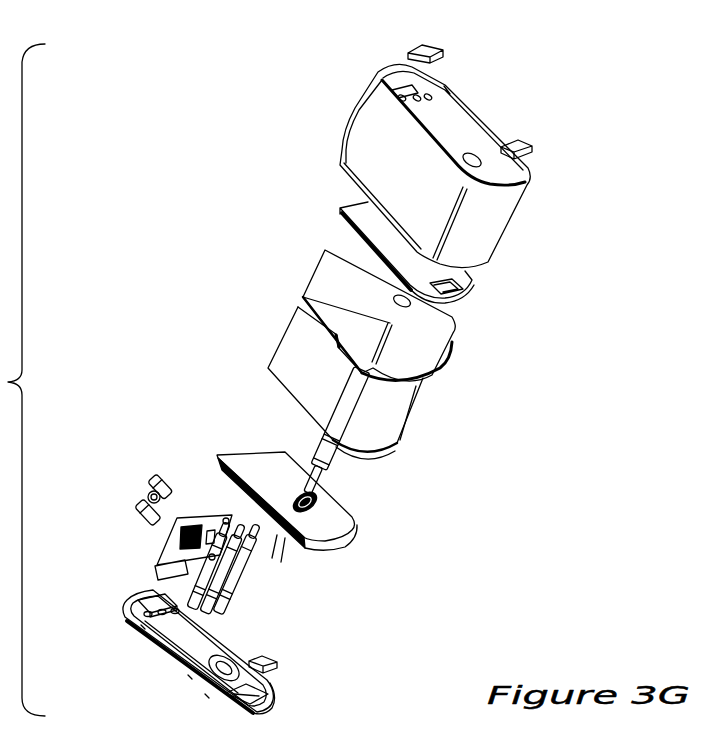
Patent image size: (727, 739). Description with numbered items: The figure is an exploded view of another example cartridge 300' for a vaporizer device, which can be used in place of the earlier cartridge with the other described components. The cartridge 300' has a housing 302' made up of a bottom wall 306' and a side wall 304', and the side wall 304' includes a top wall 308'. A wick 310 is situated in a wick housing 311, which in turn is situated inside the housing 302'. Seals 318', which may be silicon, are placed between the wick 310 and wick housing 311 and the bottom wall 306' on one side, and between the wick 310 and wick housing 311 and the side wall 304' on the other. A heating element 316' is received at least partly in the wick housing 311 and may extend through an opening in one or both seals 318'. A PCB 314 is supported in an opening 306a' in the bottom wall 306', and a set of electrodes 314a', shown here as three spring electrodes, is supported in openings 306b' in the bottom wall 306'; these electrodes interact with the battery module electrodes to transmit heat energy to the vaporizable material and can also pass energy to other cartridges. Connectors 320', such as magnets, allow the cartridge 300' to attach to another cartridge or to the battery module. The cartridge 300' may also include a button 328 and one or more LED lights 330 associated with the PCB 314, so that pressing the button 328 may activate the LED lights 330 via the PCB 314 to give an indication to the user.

The cartridge 300' is at (133, 380).
The housing 302' is at (514, 145).
The side wall 304' is at (566, 236).
The bottom wall 306' is at (269, 661).
The opening 306a' is at (151, 641).
The openings 306b' is at (167, 662).
The top wall 308' is at (463, 100).
The wick 310 is at (422, 353).
The wick housing 311 is at (393, 423).
The PCB 314 is at (185, 558).
The set of electrodes 314a' is at (321, 575).
The heating element 316' is at (419, 449).
The seals 318' is at (403, 394).
The connectors 320' is at (448, 416).
The button 328 is at (145, 488).
The LED lights 330 is at (165, 475).